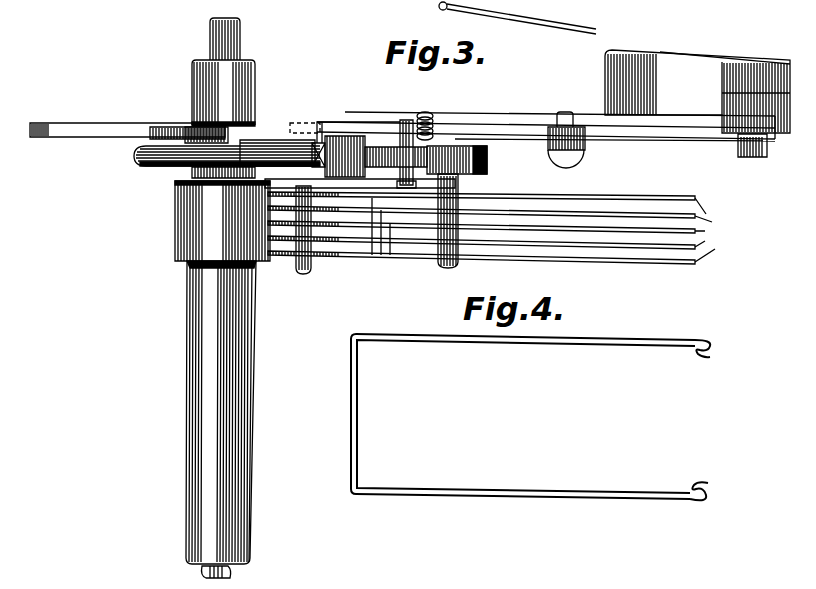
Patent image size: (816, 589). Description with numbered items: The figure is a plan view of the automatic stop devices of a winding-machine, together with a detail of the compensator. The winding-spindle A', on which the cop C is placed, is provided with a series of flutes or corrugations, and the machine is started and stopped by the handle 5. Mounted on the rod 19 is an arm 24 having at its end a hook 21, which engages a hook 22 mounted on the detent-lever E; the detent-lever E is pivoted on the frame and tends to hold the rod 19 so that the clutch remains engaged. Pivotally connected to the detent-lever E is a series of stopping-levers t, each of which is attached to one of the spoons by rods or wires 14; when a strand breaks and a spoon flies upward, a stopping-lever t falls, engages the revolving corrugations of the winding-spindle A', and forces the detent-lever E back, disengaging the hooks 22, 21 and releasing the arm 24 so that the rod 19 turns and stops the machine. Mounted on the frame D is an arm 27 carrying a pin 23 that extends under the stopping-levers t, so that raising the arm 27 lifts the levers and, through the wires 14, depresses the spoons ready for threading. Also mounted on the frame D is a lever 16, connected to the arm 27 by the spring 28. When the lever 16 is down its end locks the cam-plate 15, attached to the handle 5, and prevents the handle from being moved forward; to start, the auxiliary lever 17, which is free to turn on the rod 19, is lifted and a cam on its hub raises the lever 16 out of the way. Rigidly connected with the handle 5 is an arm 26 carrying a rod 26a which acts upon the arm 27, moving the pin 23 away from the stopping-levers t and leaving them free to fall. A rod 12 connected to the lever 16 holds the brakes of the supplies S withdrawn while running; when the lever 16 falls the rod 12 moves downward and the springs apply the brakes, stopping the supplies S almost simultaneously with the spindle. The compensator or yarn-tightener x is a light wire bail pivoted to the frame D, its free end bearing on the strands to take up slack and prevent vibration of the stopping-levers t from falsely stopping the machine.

In FIG. 3, the rod 19 is at (241, 47).
In FIG. 3, the auxiliary lever 17 is at (92, 110).
In FIG. 3, the cam-plate 15 is at (189, 127).
In FIG. 3, the handle 5 is at (149, 163).
In FIG. 3, the lever 16 is at (532, 113).
In FIG. 3, the arm 24 is at (268, 152).
In FIG. 3, the hook 21 is at (318, 125).
In FIG. 3, the hook 22 is at (341, 135).
In FIG. 3, the rod 26a is at (406, 130).
In FIG. 3, the spring 28 is at (434, 122).
In FIG. 3, the detent-lever E is at (486, 171).
In FIG. 3, the supply S is at (222, 221).
In FIG. 3, the cop C is at (188, 392).
In FIG. 3, the winding-spindle A' is at (237, 576).
In FIG. 3, the pin 23 is at (297, 244).
In FIG. 3, the arm 26 is at (358, 183).
In FIG. 3, the rods or wires 14 is at (498, 132).
In FIG. 3, the stopping-levers t is at (398, 222).
In FIG. 3, the frame D is at (697, 103).
In FIG. 3, the rod 12 is at (586, 150).
In FIG. 3, the arm 27 is at (707, 139).
In FIG. 4, the compensator or yarn-tightener x is at (504, 498).